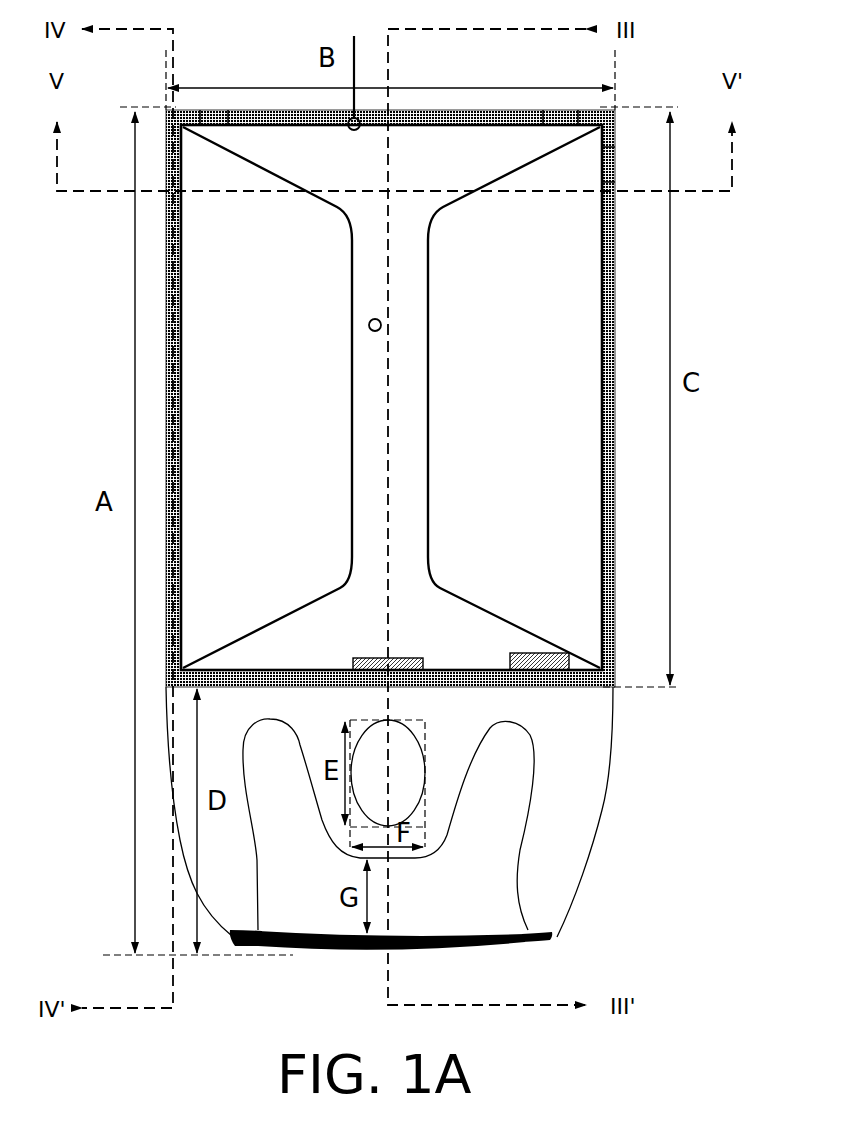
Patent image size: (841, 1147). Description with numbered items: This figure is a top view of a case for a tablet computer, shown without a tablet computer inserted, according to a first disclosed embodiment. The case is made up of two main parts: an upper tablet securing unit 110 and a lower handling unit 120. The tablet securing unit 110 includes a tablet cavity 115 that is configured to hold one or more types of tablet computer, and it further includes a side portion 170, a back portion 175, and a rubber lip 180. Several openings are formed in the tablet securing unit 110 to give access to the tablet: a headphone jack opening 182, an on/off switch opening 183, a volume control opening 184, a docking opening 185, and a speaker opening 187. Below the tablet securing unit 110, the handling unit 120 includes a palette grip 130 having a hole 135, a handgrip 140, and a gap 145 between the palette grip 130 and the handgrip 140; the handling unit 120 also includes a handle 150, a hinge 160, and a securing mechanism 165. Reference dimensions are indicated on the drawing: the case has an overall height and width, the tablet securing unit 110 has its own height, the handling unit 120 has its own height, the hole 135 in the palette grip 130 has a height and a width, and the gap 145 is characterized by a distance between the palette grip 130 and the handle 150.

The tablet securing unit 110 is at (602, 511).
The tablet cavity 115 is at (582, 334).
The handling unit 120 is at (418, 812).
The palette grip 130 is at (447, 838).
The hole 135 is at (406, 738).
The handgrip 140 is at (600, 836).
The gap 145 is at (520, 733).
The handle 150 is at (397, 936).
The hinge 160 is at (550, 949).
The securing mechanism 165 is at (236, 929).
The side portion 170 is at (182, 337).
The back portion 175 is at (368, 325).
The rubber lip 180 is at (355, 70).
The headphone jack opening 182 is at (226, 128).
The on/off switch opening 183 is at (548, 128).
The volume control opening 184 is at (608, 152).
The docking opening 185 is at (380, 657).
The speaker opening 187 is at (509, 661).